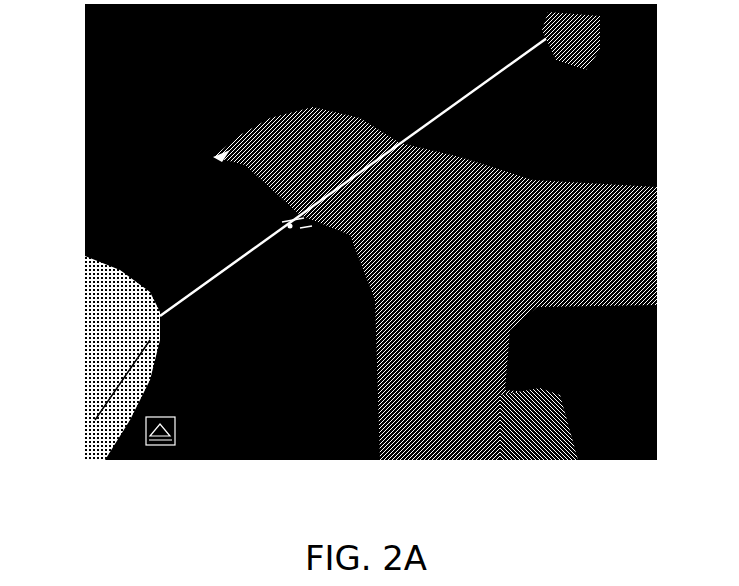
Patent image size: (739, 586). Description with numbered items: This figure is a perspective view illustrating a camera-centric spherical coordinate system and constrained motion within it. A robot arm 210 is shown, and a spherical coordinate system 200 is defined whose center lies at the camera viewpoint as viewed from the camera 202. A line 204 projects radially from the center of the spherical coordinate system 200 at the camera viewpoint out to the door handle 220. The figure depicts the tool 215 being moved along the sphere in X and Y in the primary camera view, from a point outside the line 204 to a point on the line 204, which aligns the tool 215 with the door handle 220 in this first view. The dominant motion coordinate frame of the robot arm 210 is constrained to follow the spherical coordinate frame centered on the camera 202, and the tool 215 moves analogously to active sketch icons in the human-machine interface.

The spherical coordinate system 200 is at (298, 362).
The camera 202 is at (547, 38).
The line 204 is at (193, 290).
The robot arm 210 is at (470, 452).
The tool 215 is at (293, 237).
The door handle 220 is at (143, 321).